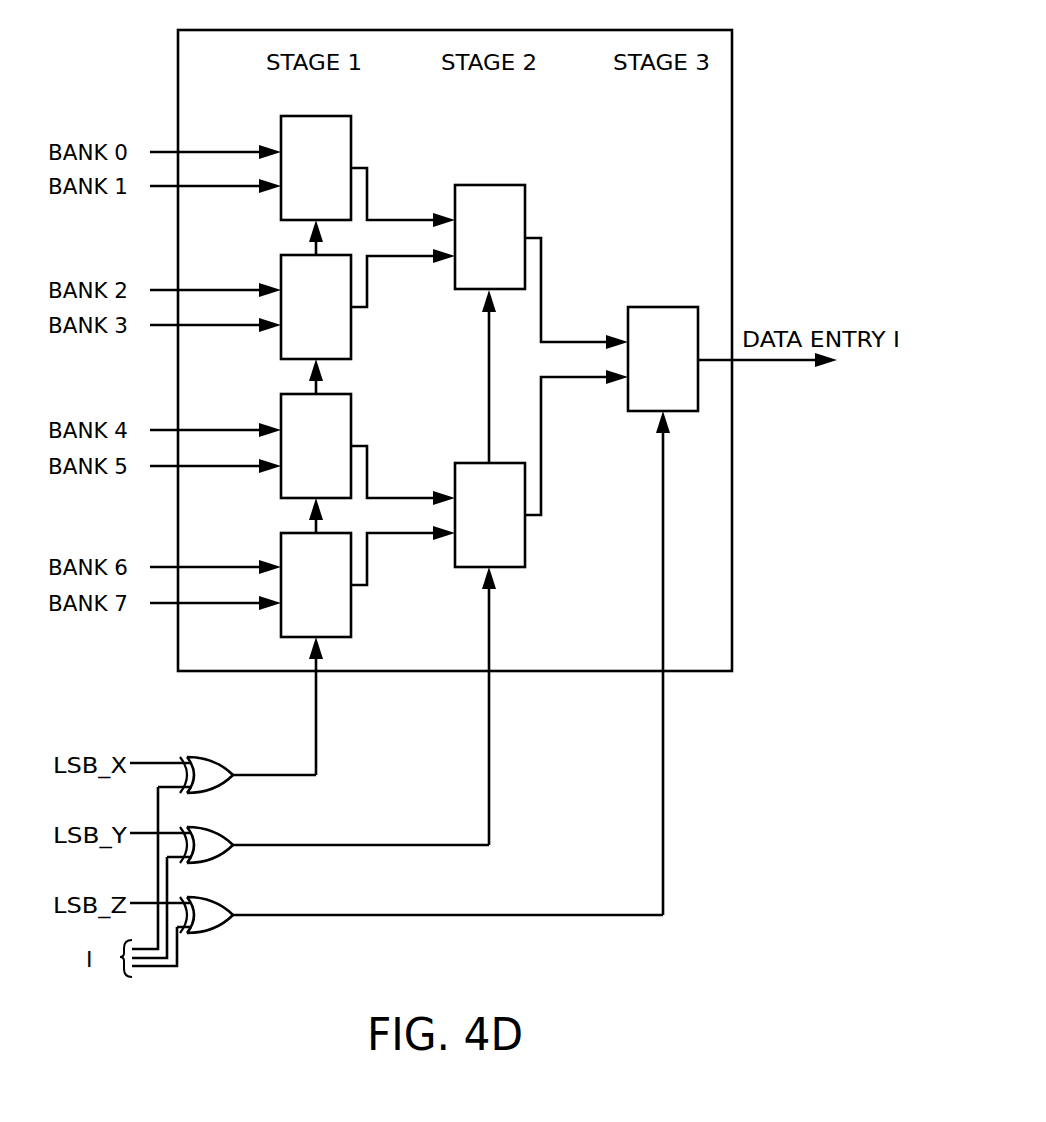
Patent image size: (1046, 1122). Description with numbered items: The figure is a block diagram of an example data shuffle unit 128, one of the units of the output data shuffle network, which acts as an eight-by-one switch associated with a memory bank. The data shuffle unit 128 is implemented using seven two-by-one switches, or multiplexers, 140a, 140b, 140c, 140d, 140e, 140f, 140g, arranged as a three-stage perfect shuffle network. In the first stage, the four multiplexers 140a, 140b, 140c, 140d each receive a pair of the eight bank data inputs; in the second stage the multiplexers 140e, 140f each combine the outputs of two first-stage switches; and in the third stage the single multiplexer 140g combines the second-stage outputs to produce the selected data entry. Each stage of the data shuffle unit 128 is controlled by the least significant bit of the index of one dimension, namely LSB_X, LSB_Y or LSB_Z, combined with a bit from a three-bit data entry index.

The data shuffle unit 128 is at (247, 28).
The 2×1 switch (multiplexer) 140a is at (297, 116).
The 2×1 switch (multiplexer) 140b is at (297, 255).
The 2×1 switch (multiplexer) 140c is at (297, 394).
The 2×1 switch (multiplexer) 140d is at (297, 533).
The 2×1 switch (multiplexer) 140e is at (468, 185).
The 2×1 switch (multiplexer) 140f is at (467, 463).
The 2×1 switch (multiplexer) 140g is at (657, 307).